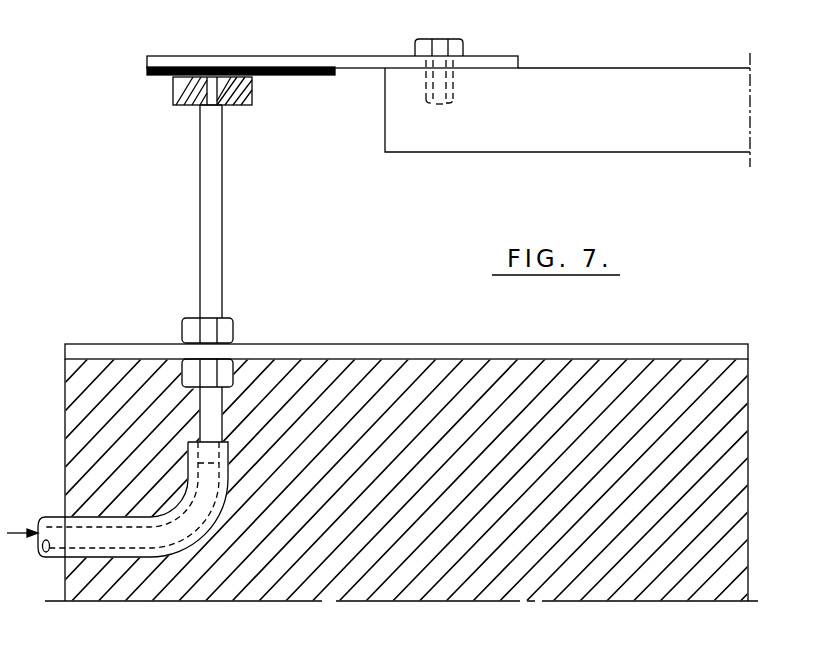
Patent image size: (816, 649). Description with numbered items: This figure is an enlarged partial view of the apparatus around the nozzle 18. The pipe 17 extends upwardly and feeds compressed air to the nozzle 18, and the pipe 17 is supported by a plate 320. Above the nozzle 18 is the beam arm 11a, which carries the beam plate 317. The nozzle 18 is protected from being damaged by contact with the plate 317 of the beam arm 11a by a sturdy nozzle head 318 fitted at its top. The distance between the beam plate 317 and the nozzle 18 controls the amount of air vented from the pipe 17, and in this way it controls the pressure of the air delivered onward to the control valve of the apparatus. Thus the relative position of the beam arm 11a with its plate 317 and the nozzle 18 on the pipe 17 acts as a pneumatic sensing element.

The beam arm 11a is at (288, 63).
The plate 317 is at (278, 77).
The nozzle head 318 is at (177, 88).
The nozzle 18 is at (200, 105).
The pipe 17 is at (210, 197).
The plate 320 is at (368, 353).